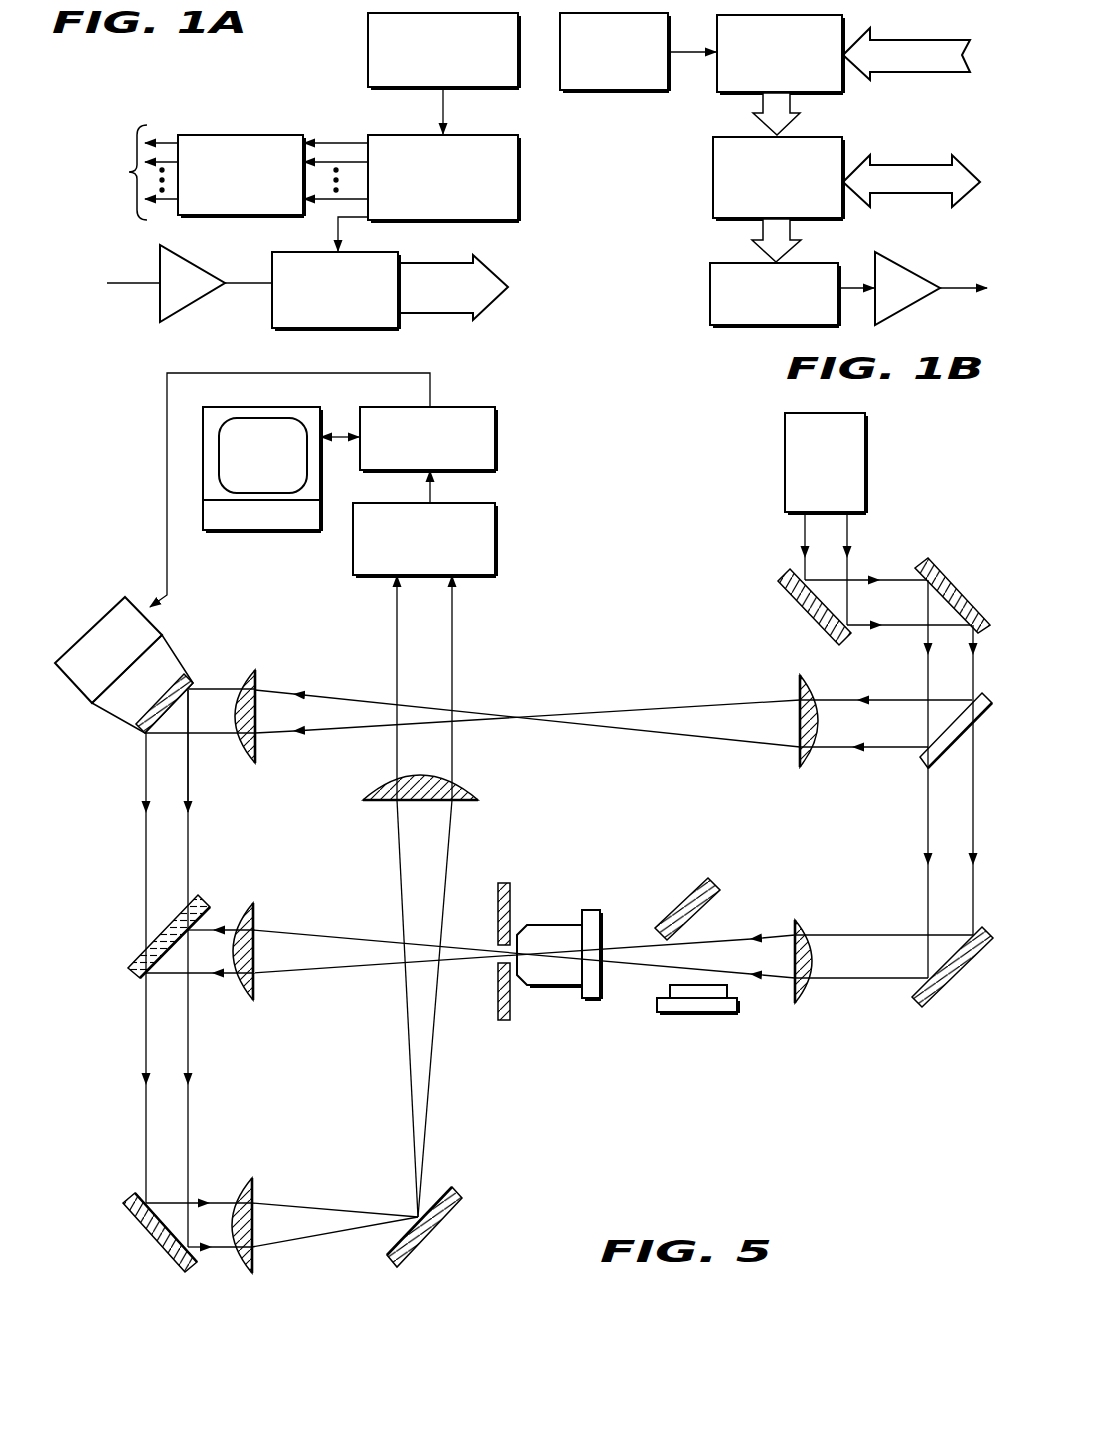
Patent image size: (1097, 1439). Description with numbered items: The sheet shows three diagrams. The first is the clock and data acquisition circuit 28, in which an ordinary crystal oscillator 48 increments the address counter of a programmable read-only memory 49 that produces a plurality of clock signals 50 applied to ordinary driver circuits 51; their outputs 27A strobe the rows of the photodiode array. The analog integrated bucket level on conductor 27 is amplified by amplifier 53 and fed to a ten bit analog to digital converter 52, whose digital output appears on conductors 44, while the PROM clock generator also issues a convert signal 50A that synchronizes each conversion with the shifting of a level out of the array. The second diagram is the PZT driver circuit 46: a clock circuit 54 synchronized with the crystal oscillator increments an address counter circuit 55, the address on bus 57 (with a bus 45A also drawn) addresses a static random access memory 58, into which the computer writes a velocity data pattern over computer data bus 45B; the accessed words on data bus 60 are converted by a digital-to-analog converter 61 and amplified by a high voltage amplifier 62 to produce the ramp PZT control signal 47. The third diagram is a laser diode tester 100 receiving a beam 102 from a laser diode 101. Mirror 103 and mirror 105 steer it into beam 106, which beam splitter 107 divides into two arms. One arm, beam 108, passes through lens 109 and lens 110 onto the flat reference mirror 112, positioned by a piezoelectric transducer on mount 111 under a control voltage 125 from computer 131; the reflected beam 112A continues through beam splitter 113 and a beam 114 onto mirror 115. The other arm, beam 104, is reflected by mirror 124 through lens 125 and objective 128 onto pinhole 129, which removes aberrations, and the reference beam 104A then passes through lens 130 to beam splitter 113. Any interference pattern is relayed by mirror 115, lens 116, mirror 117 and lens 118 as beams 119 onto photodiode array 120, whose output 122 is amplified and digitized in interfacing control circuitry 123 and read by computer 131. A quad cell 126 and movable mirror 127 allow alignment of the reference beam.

In FIG. 1A, the crystal oscillator 48 is at (368, 60).
In FIG. 1A, the programmable read-only memory 49 is at (478, 135).
In FIG. 1A, the driver circuits 51 is at (270, 135).
In FIG. 1A, the clock signals 50 is at (353, 143).
In FIG. 1A, the convert signal 50A is at (337, 226).
In FIG. 1A, the outputs 27A is at (170, 124).
In FIG. 1A, the amplifier 53 is at (197, 264).
In FIG. 1A, the conductor 27 is at (132, 284).
In FIG. 1A, the clock and data acquisition circuit 28 is at (143, 331).
In FIG. 1A, the analog to digital converter 52 is at (372, 252).
In FIG. 1A, the conductors 44 is at (461, 241).
In FIG. 1B, the clock circuit 54 is at (678, 21).
In FIG. 1B, the address counter circuit 55 is at (725, 95).
In FIG. 1B, the bus 57 is at (792, 99).
In FIG. 1B, the static random access memory 58 is at (845, 140).
In FIG. 1B, the address bus 45A is at (918, 40).
In FIG. 1B, the computer data bus 45B is at (909, 165).
In FIG. 1B, the data bus 60 is at (792, 230).
In FIG. 1B, the digital-to-analog converter 61 is at (710, 284).
In FIG. 1B, the PZT driver circuit 46 is at (688, 298).
In FIG. 1B, the high voltage amplifier 62 is at (911, 270).
In FIG. 1B, the PZT control signal 47 is at (957, 285).
In FIG. 5, the laser diode tester 100 is at (139, 1275).
In FIG. 5, the laser diode 101 is at (866, 442).
In FIG. 5, the beam 102 is at (848, 563).
In FIG. 5, the mirror 103 is at (800, 600).
In FIG. 5, the beam 104 is at (924, 868).
In FIG. 5, the reference beam 104A is at (212, 977).
In FIG. 5, the mirror 105 is at (955, 590).
In FIG. 5, the beam 106 is at (975, 657).
In FIG. 5, the beam splitter 107 is at (918, 760).
In FIG. 5, the beam 108 is at (862, 746).
In FIG. 5, the lens 109 is at (815, 690).
In FIG. 5, the lens 110 is at (254, 670).
In FIG. 5, the mirror mount with PZT 111 is at (172, 655).
In FIG. 5, the reference mirror 112 is at (133, 733).
In FIG. 5, the beam 112A is at (190, 806).
In FIG. 5, the beam splitter 113 is at (136, 957).
In FIG. 5, the beam 114 is at (190, 1077).
In FIG. 5, the mirror 115 is at (173, 1264).
In FIG. 5, the lens 116 is at (254, 1267).
In FIG. 5, the mirror 117 is at (412, 1252).
In FIG. 5, the lens 118 is at (472, 792).
In FIG. 5, the beams to array 119 is at (453, 652).
In FIG. 5, the photodiode array 120 is at (496, 528).
In FIG. 5, the output 122 is at (433, 499).
In FIG. 5, the interfacing control circuitry 123 is at (452, 407).
In FIG. 5, the mirror 124 is at (928, 1000).
In FIG. 5, the lens 125 is at (803, 1000).
In FIG. 5, the quad cell 126 is at (693, 1006).
In FIG. 5, the mirror 127 is at (718, 888).
In FIG. 5, the objective 128 is at (557, 986).
In FIG. 5, the pinhole 129 is at (512, 895).
In FIG. 5, the lens 130 is at (256, 905).
In FIG. 5, the computer 131 is at (255, 531).